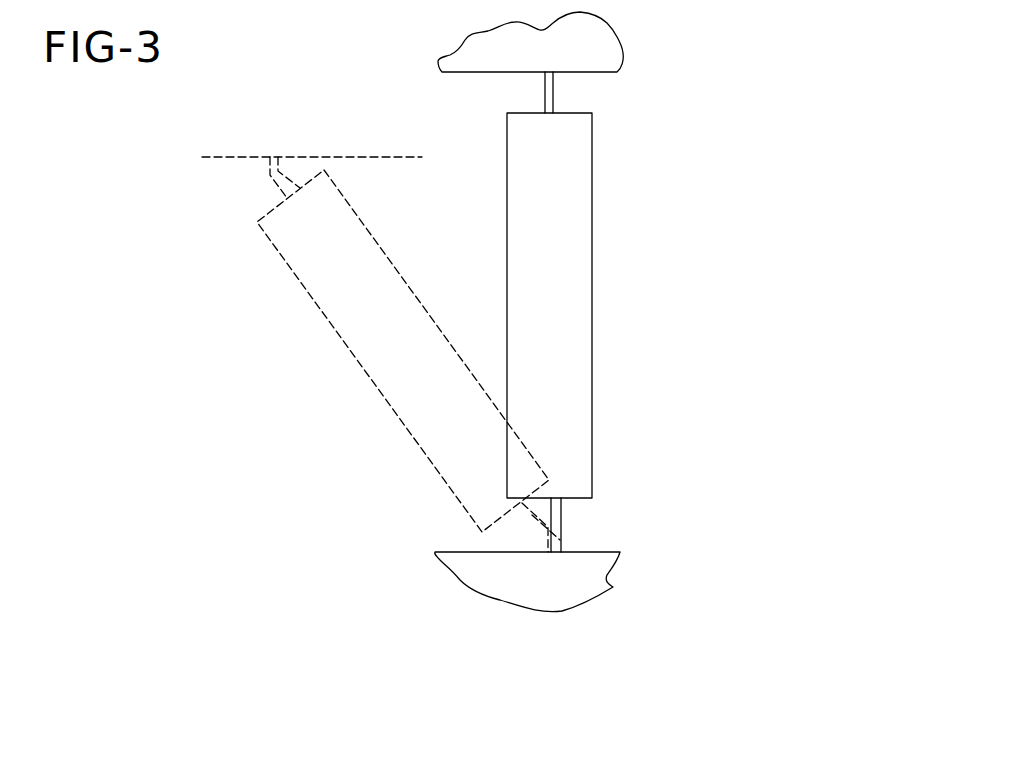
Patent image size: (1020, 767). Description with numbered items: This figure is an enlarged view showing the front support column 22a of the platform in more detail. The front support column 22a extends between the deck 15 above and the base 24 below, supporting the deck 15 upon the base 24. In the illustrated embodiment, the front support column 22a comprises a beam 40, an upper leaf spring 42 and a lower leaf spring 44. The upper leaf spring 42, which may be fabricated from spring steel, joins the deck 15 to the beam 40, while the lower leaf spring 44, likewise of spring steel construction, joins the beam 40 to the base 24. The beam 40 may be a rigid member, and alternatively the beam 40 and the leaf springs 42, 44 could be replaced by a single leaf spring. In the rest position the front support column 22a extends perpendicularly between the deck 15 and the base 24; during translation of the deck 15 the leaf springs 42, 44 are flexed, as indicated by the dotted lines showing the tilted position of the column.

The deck 15 is at (500, 45).
The upper leaf spring 42 is at (553, 95).
The beam 40 is at (592, 294).
The front support column 22a is at (630, 401).
The lower leaf spring 44 is at (561, 515).
The base 24 is at (613, 587).